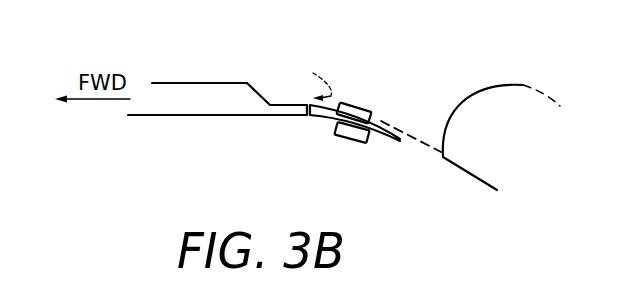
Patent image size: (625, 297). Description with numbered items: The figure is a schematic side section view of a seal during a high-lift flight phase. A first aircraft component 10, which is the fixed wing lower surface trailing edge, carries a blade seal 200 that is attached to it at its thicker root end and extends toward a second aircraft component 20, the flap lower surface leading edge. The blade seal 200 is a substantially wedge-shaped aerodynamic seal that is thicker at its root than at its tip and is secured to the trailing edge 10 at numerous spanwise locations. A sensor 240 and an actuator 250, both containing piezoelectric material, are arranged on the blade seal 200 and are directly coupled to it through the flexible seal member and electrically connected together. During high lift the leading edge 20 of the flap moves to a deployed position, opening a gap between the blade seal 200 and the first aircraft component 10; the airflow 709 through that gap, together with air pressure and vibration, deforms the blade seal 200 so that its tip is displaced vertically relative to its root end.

The first aircraft component 10 is at (224, 105).
The second aircraft component 20 is at (501, 137).
The blade seal 200 is at (378, 117).
The sensor 240 is at (347, 143).
The actuator 250 is at (359, 103).
The airflow direction 709 is at (313, 68).